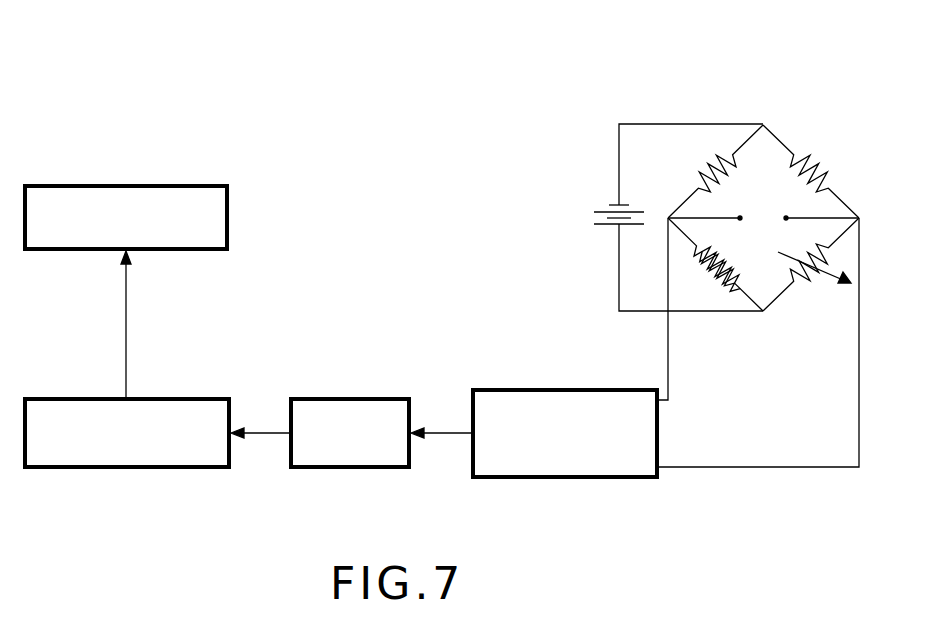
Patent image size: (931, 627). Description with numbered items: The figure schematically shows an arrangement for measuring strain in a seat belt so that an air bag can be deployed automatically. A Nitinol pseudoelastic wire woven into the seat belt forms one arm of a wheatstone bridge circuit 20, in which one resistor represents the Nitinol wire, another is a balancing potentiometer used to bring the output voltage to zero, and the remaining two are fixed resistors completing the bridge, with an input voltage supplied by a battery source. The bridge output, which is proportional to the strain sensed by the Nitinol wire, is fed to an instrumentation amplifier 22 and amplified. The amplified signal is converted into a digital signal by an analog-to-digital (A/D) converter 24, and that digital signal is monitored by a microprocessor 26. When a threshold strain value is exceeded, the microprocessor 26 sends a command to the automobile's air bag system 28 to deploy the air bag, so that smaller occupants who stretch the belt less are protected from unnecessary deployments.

The wheatstone bridge circuit 20 is at (594, 136).
The instrumentation amplifier 22 is at (537, 390).
The analog-to-digital (A/D) converter 24 is at (337, 398).
The microprocessor 26 is at (78, 398).
The air bag system 28 is at (130, 185).